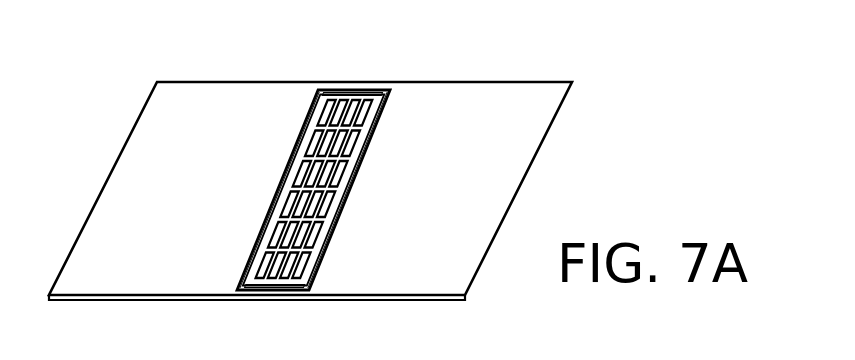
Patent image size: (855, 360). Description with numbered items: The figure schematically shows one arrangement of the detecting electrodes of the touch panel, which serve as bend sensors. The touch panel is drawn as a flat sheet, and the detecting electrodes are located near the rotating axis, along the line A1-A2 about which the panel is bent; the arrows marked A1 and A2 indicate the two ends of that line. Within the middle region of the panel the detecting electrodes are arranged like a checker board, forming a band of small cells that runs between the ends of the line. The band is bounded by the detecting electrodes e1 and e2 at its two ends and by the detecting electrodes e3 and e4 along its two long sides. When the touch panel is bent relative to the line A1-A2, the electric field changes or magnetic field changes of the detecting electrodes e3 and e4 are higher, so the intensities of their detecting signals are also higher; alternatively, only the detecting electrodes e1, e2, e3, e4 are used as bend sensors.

The detecting electrode e1 is at (371, 89).
The detecting electrode e2 is at (299, 291).
The detecting electrode e3 is at (283, 180).
The detecting electrode e4 is at (354, 186).
The line A1-A2 endpoint A1 is at (369, 58).
The line A1-A2 endpoint A2 is at (263, 323).